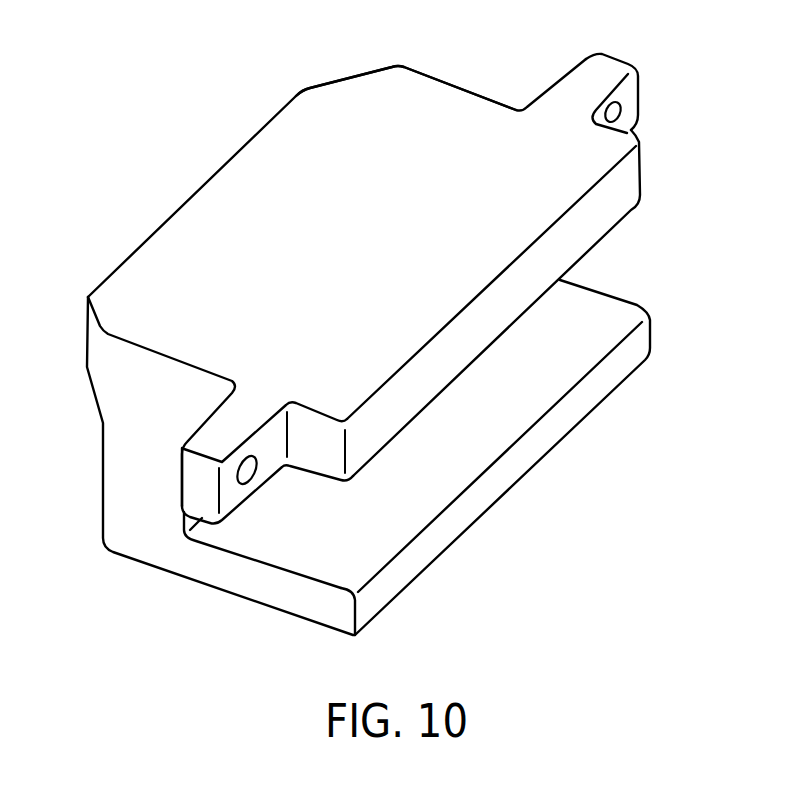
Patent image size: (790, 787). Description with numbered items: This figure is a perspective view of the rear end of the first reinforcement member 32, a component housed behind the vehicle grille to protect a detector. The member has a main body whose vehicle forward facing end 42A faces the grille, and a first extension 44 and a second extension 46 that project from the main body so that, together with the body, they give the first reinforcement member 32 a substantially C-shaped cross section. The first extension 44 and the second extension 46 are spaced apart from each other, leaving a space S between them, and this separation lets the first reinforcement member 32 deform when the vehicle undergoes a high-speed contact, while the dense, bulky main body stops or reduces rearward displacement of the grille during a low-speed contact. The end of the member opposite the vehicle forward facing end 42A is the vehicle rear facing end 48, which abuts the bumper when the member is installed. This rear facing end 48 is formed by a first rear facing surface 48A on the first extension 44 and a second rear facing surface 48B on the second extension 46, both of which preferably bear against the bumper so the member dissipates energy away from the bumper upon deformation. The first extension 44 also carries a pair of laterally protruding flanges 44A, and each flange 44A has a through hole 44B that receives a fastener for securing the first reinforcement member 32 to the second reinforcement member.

The first reinforcement member 32 is at (140, 85).
The vehicle forward facing end 42A is at (127, 258).
The first extension 44 is at (316, 443).
The laterally protruding flange 44A is at (583, 84).
The through hole 44B is at (615, 114).
The second extension 46 is at (105, 168).
The vehicle rear facing end 48 is at (678, 233).
The first rear facing surface 48A is at (608, 207).
The second rear facing surface 48B is at (605, 375).
The space S is at (311, 543).